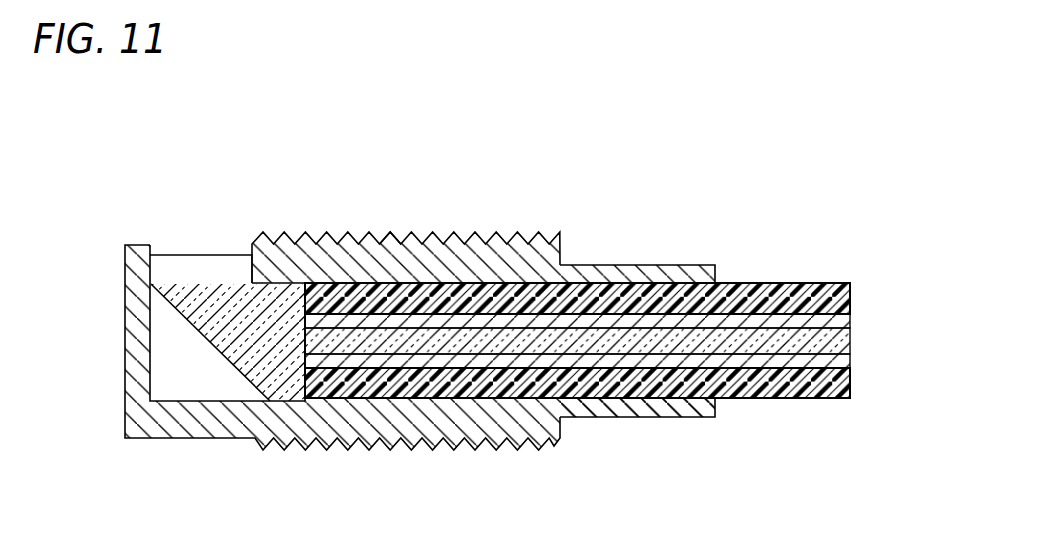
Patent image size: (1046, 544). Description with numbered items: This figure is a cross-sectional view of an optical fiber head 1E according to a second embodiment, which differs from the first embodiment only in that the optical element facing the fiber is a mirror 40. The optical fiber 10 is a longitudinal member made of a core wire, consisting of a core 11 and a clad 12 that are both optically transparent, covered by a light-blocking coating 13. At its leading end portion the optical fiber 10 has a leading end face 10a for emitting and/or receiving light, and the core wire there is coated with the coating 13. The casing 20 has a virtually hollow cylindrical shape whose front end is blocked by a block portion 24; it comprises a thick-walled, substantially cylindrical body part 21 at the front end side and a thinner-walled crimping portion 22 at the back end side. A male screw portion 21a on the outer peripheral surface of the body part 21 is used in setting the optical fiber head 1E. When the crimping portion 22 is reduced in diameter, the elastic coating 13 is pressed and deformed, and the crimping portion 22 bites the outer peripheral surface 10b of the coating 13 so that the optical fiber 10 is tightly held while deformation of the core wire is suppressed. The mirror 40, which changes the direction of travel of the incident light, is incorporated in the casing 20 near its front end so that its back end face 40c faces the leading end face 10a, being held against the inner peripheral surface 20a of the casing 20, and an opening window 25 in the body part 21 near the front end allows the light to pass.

The optical fiber head 1E is at (728, 163).
The optical fiber 10 is at (788, 272).
The leading end face 10a is at (305, 372).
The outer peripheral surface 10b is at (505, 400).
The core 11 is at (622, 340).
The clad 12 is at (689, 362).
The coating 13 is at (756, 387).
The casing 20 is at (122, 225).
The inner peripheral surface 20a is at (470, 283).
The body part 21 is at (513, 262).
The male screw portion 21a is at (393, 236).
The crimping portion 22 is at (620, 274).
The block portion 24 is at (138, 333).
The opening window 25 is at (252, 268).
The mirror 40 is at (236, 352).
The back end face 40c is at (308, 288).